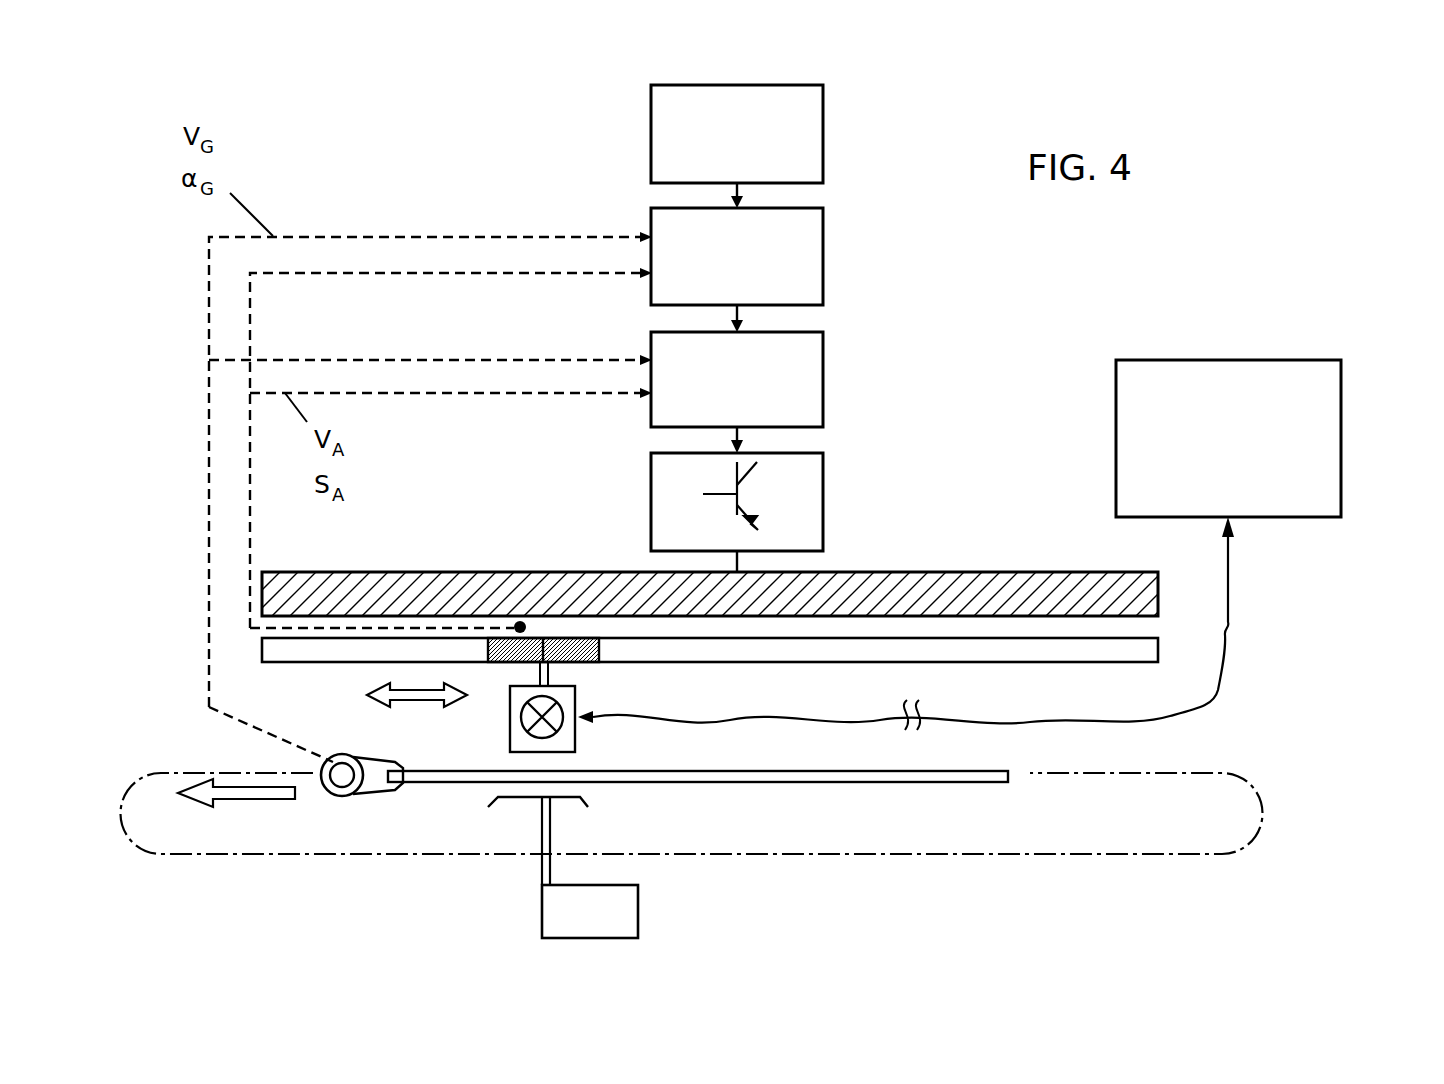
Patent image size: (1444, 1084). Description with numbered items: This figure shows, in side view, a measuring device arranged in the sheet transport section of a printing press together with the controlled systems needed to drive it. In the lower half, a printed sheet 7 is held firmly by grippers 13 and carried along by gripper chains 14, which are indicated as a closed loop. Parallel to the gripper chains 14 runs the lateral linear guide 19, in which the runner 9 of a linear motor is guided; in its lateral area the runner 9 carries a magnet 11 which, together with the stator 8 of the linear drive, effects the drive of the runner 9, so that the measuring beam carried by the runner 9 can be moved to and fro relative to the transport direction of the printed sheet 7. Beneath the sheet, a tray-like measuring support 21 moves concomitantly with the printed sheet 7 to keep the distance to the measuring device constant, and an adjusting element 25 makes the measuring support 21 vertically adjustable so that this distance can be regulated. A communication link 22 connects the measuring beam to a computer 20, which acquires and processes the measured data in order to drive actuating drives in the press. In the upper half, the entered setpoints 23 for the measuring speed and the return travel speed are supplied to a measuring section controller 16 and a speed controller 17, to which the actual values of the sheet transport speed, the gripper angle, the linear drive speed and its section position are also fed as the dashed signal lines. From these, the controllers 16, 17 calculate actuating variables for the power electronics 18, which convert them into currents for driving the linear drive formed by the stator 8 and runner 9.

The printed sheet 7 is at (955, 783).
The stator 8 is at (920, 583).
The runner 9 is at (570, 695).
The magnet 11 is at (577, 645).
The grippers 13 is at (350, 758).
The gripper chains 14 is at (1110, 854).
The measuring section controller 16 is at (803, 252).
The speed controller 17 is at (806, 380).
The power electronics 18 is at (805, 490).
The linear drive guide 19 is at (1007, 650).
The computer 20 is at (1317, 442).
The measuring support 21 is at (513, 798).
The communication link 22 is at (1228, 626).
The setpoints 23 is at (805, 135).
The adjusting element 25 is at (628, 915).